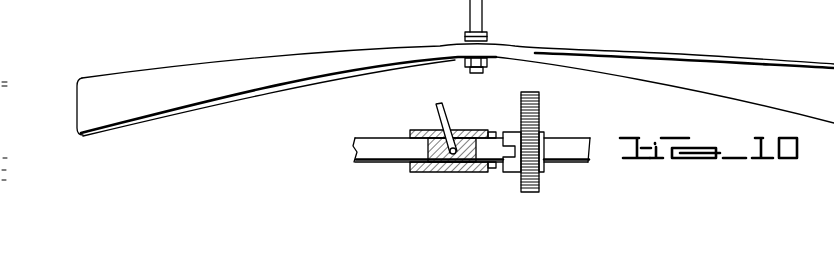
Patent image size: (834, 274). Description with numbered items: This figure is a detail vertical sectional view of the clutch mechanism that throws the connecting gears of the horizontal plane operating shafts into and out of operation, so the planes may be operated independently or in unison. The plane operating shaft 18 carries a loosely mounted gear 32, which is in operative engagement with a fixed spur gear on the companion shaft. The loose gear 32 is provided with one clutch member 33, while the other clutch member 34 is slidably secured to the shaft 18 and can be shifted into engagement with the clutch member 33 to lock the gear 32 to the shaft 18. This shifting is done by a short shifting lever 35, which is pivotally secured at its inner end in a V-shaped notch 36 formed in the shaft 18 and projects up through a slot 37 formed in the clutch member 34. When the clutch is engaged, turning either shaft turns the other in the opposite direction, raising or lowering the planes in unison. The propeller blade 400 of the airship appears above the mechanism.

The propeller blade 400 is at (622, 66).
The drive shaft 18 is at (376, 140).
The shaft 32 is at (539, 112).
The gear 33 is at (508, 132).
The coupling member 34 is at (481, 132).
The pivot pin 35 is at (437, 106).
The sleeve housing 36 is at (456, 167).
The lever 37 is at (450, 125).